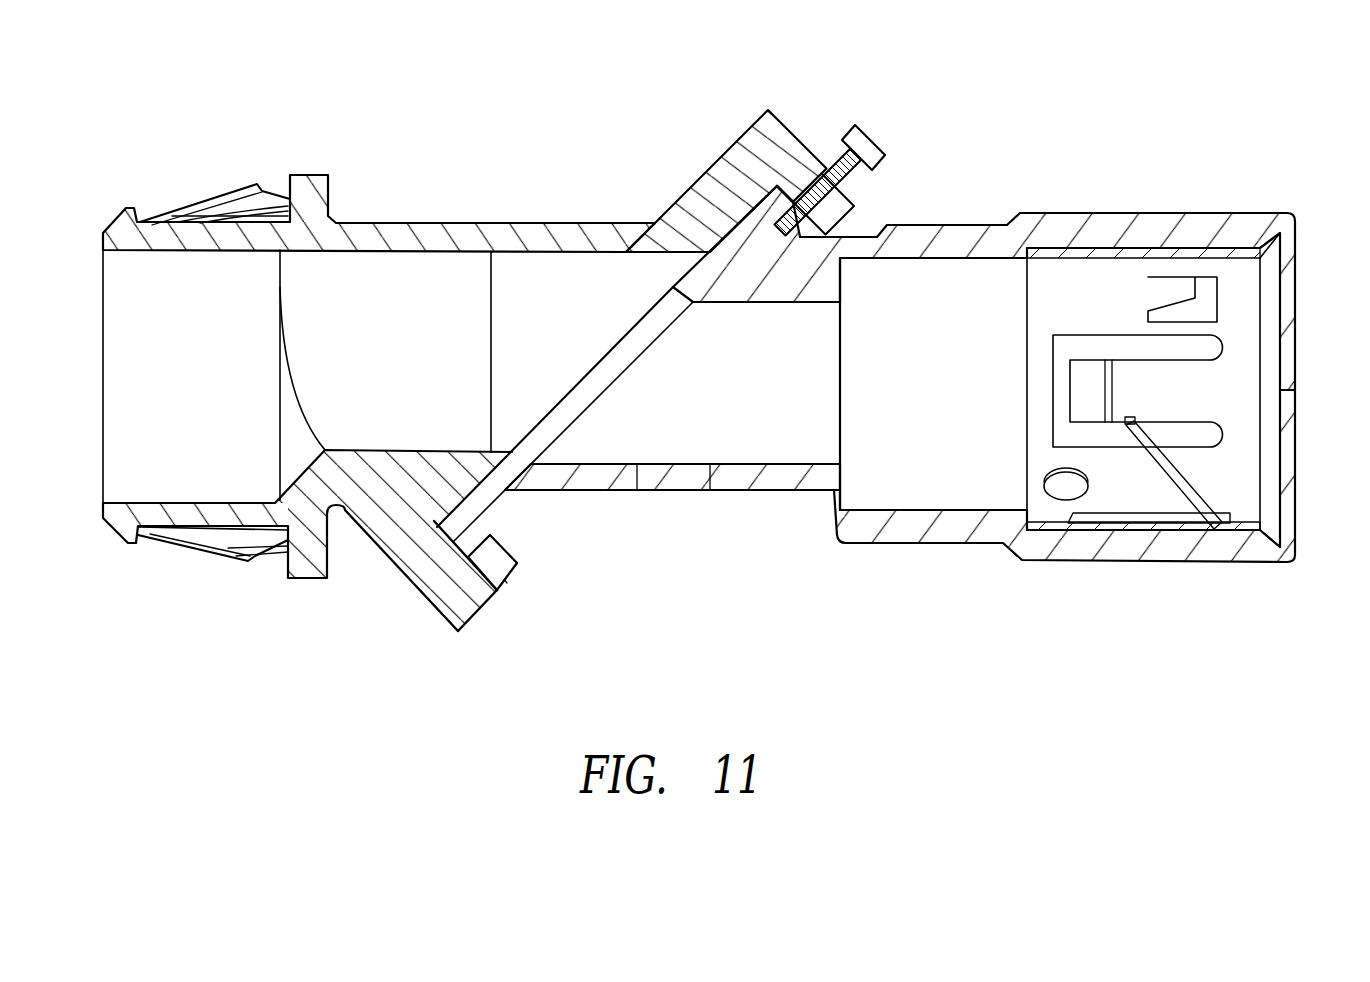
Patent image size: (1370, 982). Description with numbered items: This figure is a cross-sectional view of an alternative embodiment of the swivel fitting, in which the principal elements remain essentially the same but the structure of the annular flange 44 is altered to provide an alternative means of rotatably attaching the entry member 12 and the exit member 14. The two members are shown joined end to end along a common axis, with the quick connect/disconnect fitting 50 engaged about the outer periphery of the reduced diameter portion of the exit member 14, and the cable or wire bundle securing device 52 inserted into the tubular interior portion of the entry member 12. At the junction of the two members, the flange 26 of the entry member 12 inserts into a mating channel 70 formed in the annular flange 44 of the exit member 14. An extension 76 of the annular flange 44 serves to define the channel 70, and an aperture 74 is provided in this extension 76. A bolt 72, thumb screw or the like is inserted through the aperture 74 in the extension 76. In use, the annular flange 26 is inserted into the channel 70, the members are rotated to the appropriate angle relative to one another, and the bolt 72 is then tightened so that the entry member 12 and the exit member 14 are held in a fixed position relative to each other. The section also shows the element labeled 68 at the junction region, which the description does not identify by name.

The entry member 12 is at (1030, 192).
The exit member 14 is at (483, 180).
The flange 26 is at (548, 508).
The annular flange 44 is at (753, 140).
The quick connect/disconnect fitting 50 is at (1232, 383).
The cable or wire bundle securing device 52 is at (228, 185).
The gasket plate 68 is at (443, 548).
The channel 70 is at (496, 593).
The bolt 72 is at (866, 140).
The aperture 74 is at (852, 183).
The extension 76 is at (856, 218).